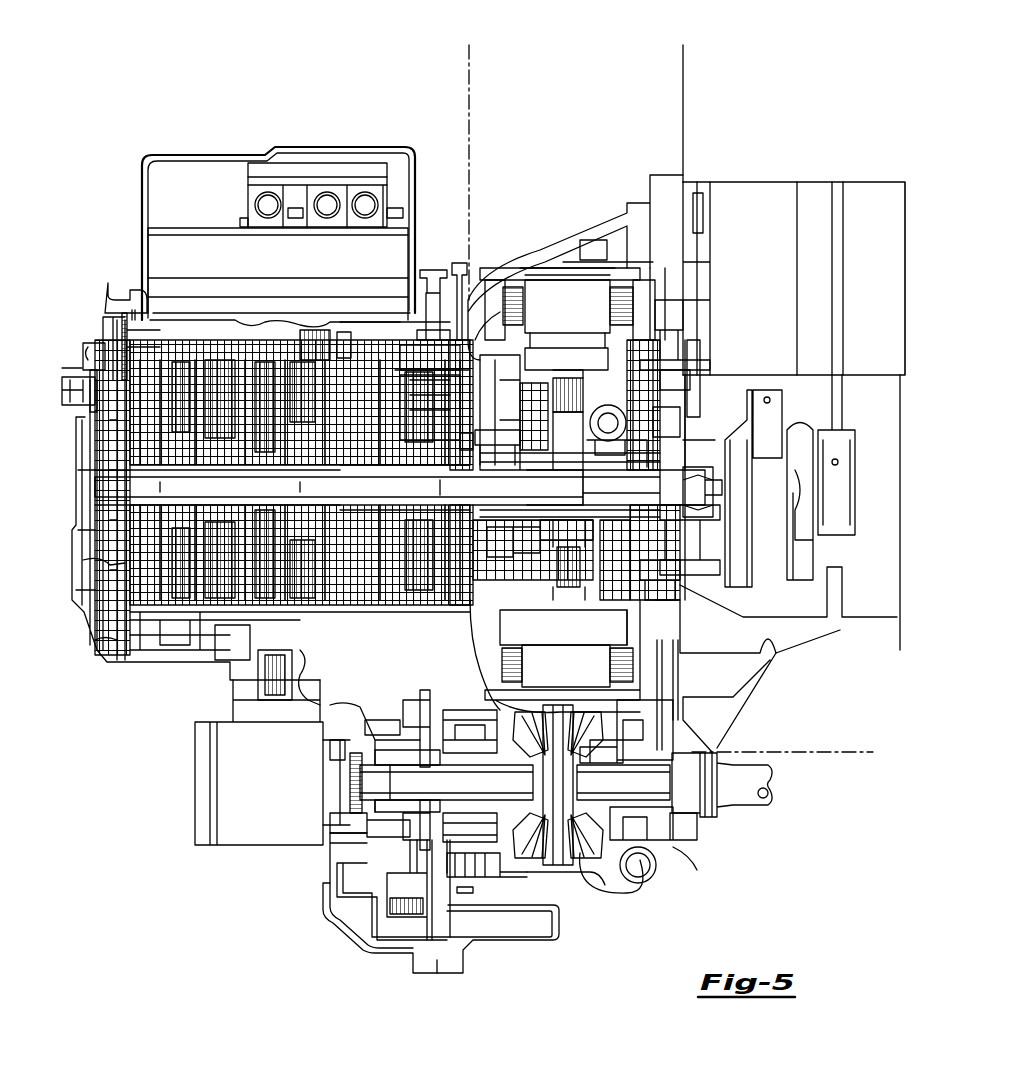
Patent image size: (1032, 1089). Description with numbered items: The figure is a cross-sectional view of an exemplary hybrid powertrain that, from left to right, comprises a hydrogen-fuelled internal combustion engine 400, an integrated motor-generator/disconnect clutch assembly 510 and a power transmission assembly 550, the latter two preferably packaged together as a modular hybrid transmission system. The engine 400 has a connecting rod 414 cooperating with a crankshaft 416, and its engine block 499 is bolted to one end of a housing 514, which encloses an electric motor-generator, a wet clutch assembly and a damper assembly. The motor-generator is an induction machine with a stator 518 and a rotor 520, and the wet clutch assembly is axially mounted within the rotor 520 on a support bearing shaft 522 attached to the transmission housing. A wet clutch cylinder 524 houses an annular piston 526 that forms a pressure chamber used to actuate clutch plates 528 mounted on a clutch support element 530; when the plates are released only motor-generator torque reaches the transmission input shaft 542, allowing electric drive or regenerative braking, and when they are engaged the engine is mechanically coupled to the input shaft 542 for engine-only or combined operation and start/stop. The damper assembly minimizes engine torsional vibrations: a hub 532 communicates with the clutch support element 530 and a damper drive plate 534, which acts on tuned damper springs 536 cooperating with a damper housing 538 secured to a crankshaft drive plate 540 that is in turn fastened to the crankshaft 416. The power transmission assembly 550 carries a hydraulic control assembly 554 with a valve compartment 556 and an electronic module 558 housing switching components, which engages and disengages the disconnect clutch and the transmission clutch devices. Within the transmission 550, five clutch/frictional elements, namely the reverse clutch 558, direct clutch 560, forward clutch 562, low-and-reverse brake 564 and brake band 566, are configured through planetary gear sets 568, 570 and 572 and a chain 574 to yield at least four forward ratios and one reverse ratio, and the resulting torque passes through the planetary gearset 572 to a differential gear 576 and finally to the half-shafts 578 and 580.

The hydrogen-fuelled internal combustion engine 400 is at (810, 126).
The connecting rod 414 is at (845, 284).
The crankshaft 416 is at (768, 385).
The engine block 499 is at (700, 178).
The integrated motor-generator/disconnect clutch assembly 510 is at (578, 78).
The housing 514 is at (640, 175).
The stator 518 is at (575, 305).
The rotor 520 is at (541, 345).
The support bearing shaft 522 is at (486, 430).
The wet clutch cylinder 524 is at (502, 545).
The annular piston 526 is at (527, 565).
The clutch plates 528 is at (523, 373).
The clutch support element 530 is at (527, 592).
The hub 532 is at (690, 522).
The damper drive plate 534 is at (700, 330).
The damper springs 536 is at (690, 420).
The damper housing 538 is at (680, 572).
The crankshaft drive plate 540 is at (680, 633).
The transmission input shaft 542 is at (366, 480).
The power transmission assembly 550 is at (205, 125).
The hydraulic control assembly 554 is at (118, 197).
The valve compartment 556 is at (180, 252).
The electronic module 558 is at (290, 170).
The direct clutch 560 is at (235, 610).
The forward clutch 562 is at (262, 640).
The low-and-reverse brake 564 is at (290, 325).
The brake band 566 is at (250, 655).
The planetary gear set 568 is at (328, 335).
The planetary gear set 570 is at (345, 415).
The planetary gear set 572 is at (500, 868).
The chain 574 is at (410, 330).
The differential gear 576 is at (590, 855).
The half-shaft 578 is at (420, 790).
The half-shaft 580 is at (682, 852).